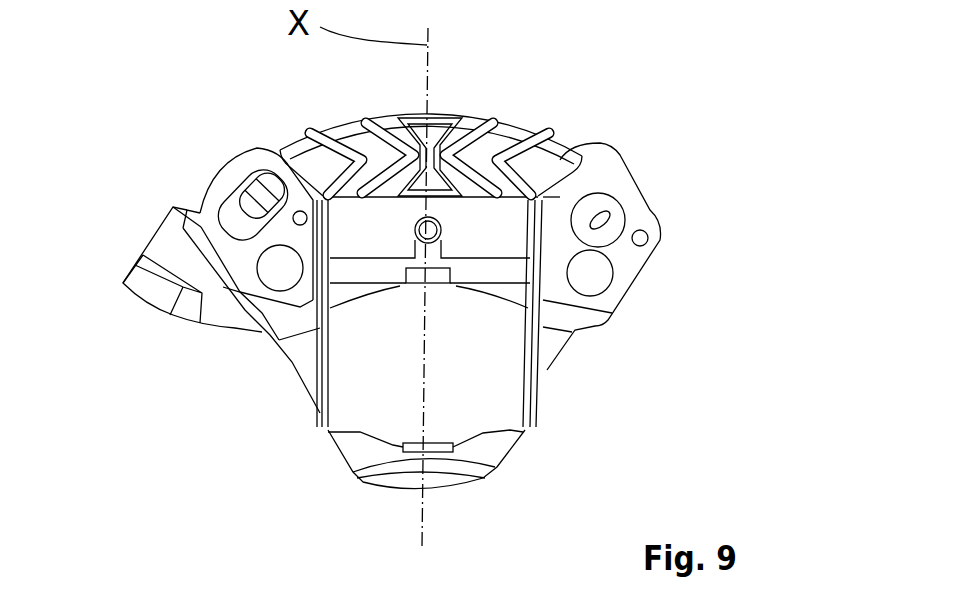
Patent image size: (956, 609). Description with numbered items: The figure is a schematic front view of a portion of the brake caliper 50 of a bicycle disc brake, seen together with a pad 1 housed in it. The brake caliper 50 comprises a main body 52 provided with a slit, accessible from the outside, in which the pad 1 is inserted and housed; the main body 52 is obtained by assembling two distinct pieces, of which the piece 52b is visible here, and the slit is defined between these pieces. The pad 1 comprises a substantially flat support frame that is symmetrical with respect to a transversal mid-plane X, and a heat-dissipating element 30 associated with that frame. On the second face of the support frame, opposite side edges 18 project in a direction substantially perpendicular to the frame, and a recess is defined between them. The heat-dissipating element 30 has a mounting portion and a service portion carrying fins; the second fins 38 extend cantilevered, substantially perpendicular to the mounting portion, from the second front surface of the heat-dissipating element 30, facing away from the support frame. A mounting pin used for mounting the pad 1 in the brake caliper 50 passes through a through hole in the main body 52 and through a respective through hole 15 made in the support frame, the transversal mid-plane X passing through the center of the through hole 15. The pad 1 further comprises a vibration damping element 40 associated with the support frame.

The brake caliper 50 is at (175, 80).
The pad 1 is at (308, 117).
The second fins 38 is at (472, 130).
The heat-dissipating element 30 is at (512, 252).
The vibration damping element 40 is at (488, 382).
The main body 52 is at (687, 222).
The piece 52b is at (620, 280).
The side edges 18 is at (538, 360).
The through hole 15 is at (422, 232).